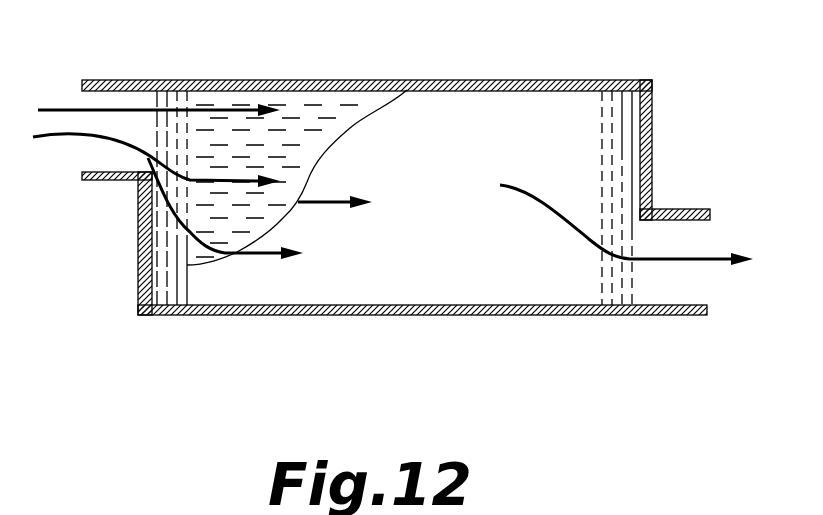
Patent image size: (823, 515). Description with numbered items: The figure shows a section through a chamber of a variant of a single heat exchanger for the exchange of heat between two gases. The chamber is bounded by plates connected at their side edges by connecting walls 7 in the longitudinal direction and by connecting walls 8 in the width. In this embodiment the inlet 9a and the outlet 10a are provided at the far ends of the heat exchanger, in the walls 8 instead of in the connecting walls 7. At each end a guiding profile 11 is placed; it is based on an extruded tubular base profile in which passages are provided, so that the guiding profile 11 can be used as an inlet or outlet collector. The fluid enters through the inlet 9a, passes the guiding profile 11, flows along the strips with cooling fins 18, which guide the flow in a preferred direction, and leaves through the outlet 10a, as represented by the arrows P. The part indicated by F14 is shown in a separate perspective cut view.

The connecting wall 7 is at (420, 91).
The connecting wall 8 is at (138, 306).
The guiding profile 11 is at (165, 288).
The cooling fins 18 is at (323, 128).
The inlet 9a is at (86, 155).
The outlet 10a is at (697, 292).
The arrows P is at (399, 177).
The part indicated by F14 is at (194, 289).